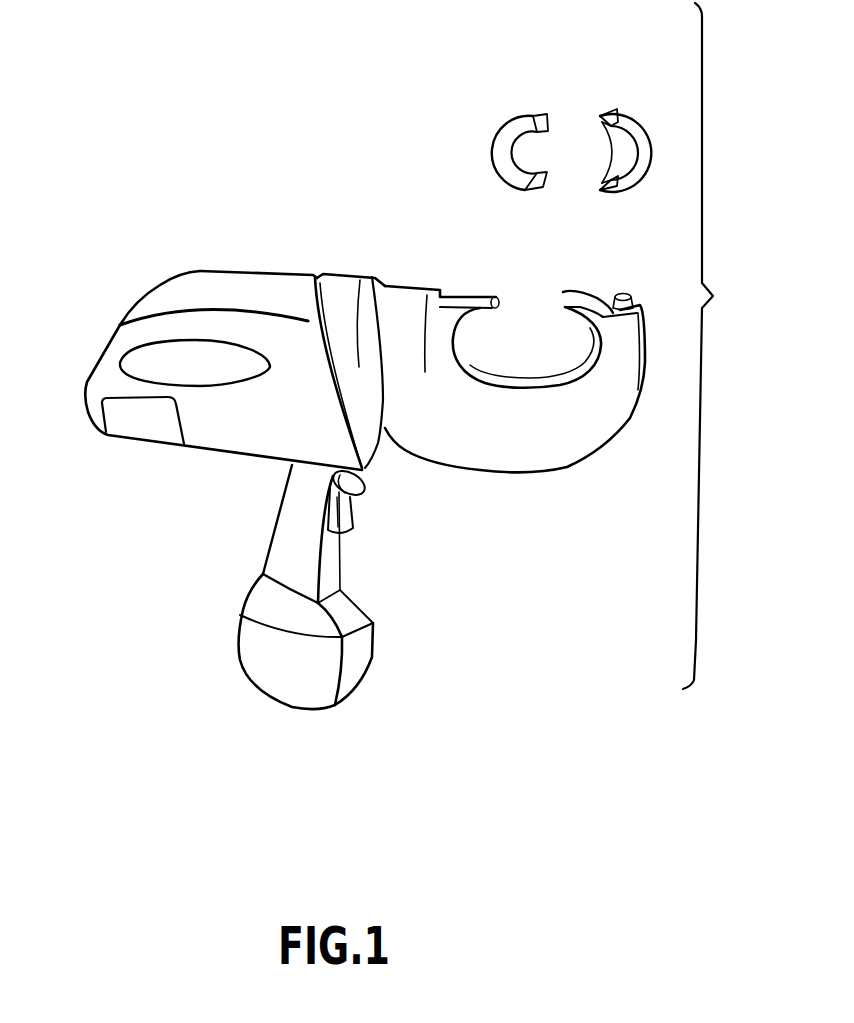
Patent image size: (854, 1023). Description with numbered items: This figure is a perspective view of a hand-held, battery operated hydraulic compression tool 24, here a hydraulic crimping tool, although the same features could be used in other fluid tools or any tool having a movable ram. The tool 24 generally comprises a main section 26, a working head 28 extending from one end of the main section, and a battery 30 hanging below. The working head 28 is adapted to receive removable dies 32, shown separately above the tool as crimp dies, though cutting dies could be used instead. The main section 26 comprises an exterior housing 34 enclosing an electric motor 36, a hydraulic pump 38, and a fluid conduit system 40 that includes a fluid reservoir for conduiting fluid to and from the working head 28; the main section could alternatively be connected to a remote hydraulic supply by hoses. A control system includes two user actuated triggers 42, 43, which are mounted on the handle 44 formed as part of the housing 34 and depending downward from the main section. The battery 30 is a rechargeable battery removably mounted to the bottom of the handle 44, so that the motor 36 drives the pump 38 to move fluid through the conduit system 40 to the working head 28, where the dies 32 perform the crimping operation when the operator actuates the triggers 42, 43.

The tool 24 is at (128, 289).
The main section 26 is at (108, 350).
The working head 28 is at (577, 470).
The battery 30 is at (282, 706).
The dies 32 is at (561, 72).
The exterior housing 34 is at (160, 287).
The electric motor 36 is at (103, 380).
The hydraulic pump 38 is at (252, 290).
The fluid conduit system 40 is at (290, 288).
The trigger 42 is at (353, 521).
The trigger 43 is at (366, 488).
The handle 44 is at (285, 522).